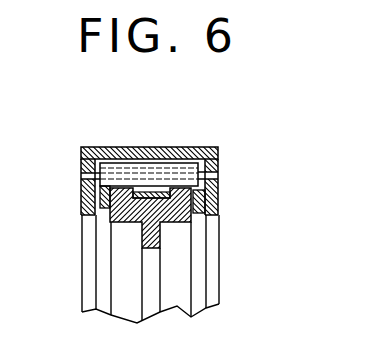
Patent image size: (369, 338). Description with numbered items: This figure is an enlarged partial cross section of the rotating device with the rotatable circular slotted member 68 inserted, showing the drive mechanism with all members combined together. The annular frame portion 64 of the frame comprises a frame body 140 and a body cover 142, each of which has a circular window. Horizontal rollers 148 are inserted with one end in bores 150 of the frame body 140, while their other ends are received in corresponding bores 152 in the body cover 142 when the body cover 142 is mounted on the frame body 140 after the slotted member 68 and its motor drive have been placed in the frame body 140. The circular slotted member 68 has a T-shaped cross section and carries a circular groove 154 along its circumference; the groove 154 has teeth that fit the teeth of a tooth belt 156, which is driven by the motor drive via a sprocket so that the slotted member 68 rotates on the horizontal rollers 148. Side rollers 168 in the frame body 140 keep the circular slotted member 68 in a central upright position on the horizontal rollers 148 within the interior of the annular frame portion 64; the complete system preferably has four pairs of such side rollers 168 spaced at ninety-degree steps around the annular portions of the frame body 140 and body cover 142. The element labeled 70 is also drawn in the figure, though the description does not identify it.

The frame body 140 is at (92, 147).
The body cover 142 is at (222, 156).
The horizontal rollers 148 is at (134, 172).
The bores 150 is at (96, 176).
The bores 152 is at (218, 173).
The circular groove 154 is at (162, 192).
The tooth belt 156 is at (110, 213).
The annular frame portion 64 is at (84, 202).
The side rollers 168 is at (84, 226).
The circular slotted member 68 is at (192, 255).
The stem 70 is at (153, 297).